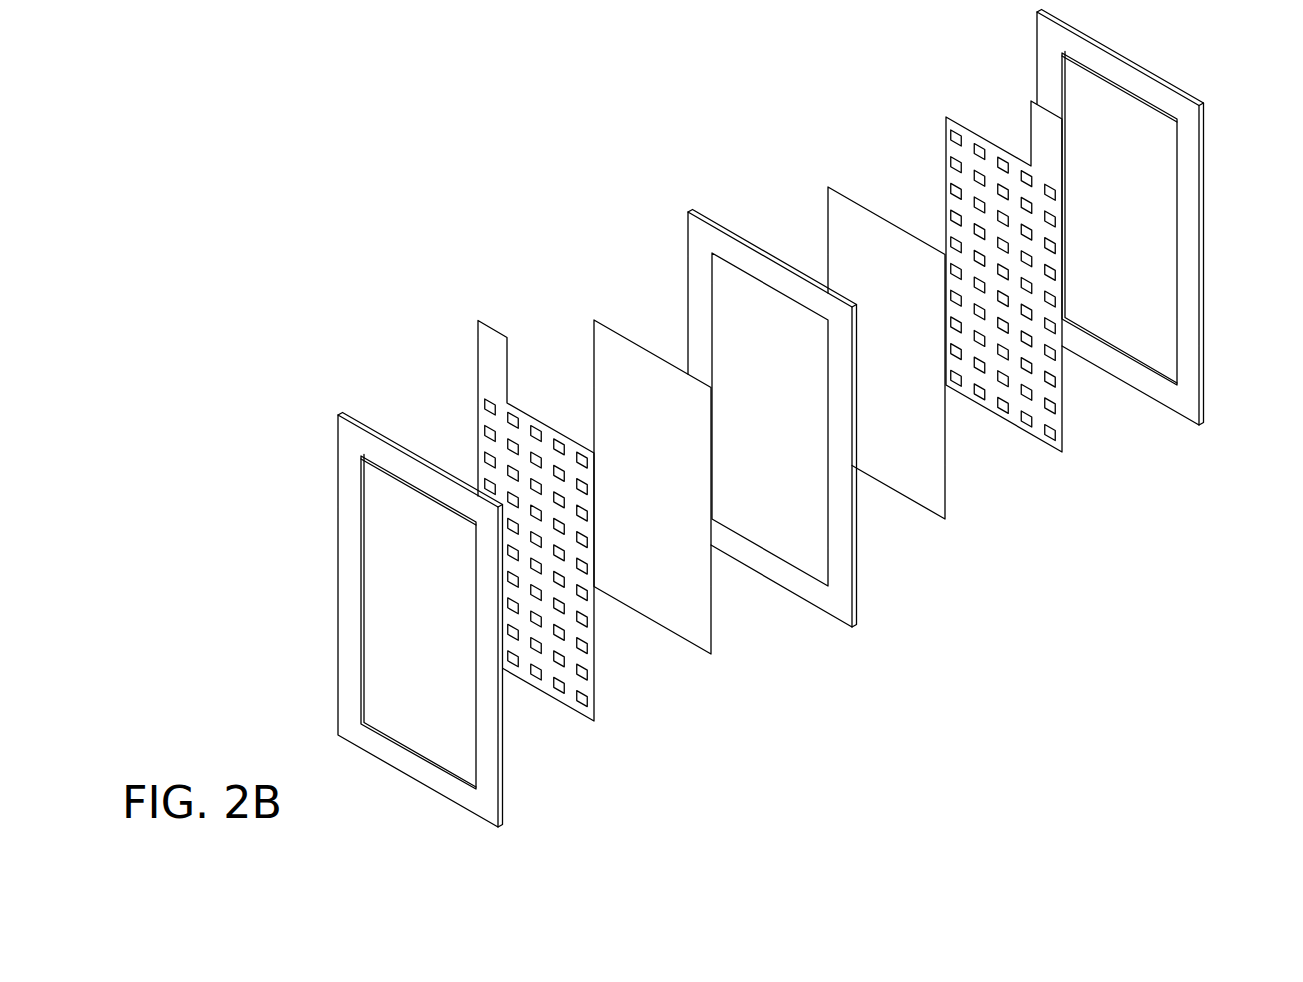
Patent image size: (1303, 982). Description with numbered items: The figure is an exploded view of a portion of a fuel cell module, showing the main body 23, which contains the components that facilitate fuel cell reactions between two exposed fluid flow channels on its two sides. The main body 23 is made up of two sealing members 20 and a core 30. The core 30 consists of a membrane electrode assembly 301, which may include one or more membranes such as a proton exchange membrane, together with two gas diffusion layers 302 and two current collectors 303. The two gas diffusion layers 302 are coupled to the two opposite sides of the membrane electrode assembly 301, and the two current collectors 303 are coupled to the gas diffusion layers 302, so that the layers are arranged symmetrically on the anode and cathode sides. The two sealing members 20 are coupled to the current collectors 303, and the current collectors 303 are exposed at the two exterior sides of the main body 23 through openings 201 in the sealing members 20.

The main body 23 is at (290, 82).
The sealing member 20 is at (750, 419).
The opening 201 is at (383, 532).
The core 30 is at (945, 97).
The membrane electrode assembly 301 is at (852, 578).
The gas diffusion layer 302 is at (711, 622).
The current collector 303 is at (593, 688).